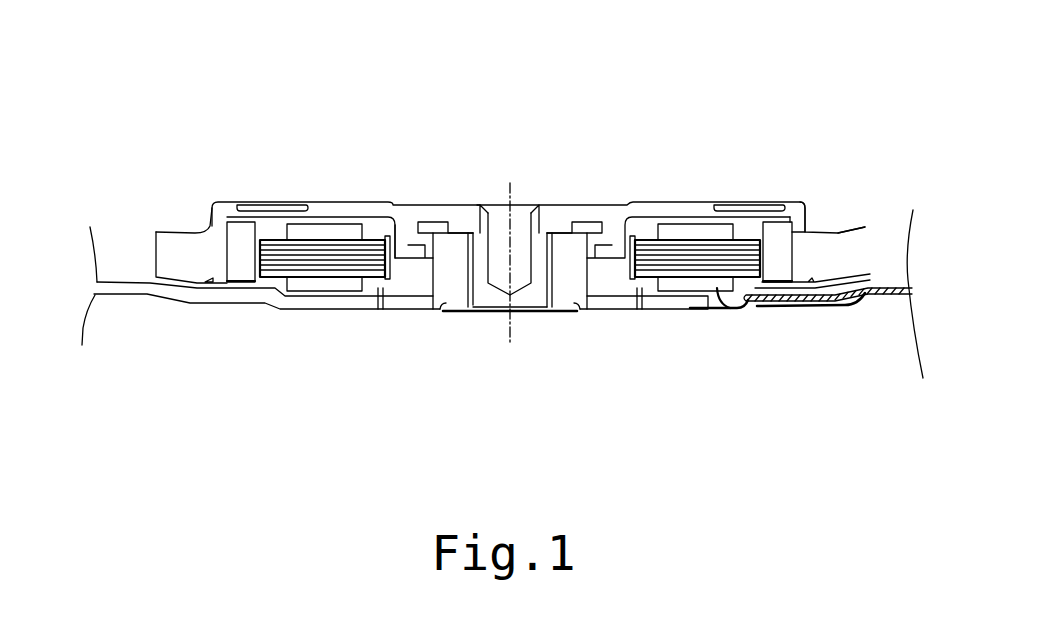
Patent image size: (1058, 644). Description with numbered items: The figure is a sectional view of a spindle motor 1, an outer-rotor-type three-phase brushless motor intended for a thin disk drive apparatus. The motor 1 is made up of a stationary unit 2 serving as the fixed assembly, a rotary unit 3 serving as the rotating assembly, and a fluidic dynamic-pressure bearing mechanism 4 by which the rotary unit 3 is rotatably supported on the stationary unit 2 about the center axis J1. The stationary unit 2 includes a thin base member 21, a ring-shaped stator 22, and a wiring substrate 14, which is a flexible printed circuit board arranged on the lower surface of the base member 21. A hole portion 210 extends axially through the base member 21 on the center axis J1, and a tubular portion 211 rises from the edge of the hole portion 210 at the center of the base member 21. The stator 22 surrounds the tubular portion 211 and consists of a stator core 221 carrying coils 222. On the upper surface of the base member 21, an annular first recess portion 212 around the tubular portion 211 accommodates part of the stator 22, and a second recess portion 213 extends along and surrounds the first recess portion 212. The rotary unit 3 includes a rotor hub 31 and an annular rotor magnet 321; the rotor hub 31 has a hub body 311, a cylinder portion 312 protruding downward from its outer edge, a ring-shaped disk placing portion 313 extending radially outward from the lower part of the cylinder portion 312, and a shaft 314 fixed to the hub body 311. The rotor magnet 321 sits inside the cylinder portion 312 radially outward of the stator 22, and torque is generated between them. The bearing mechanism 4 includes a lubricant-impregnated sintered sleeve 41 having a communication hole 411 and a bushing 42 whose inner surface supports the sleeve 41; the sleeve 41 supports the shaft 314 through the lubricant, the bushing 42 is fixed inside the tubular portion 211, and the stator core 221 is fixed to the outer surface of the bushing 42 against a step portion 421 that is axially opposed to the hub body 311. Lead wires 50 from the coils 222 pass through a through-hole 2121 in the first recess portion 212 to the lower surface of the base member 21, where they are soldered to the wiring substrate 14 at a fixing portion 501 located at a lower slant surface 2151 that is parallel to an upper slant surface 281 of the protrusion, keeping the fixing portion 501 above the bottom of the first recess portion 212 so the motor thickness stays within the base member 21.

The spindle motor 1 is at (98, 113).
The stationary unit 2 is at (313, 410).
The rotary unit 3 is at (407, 178).
The bearing mechanism 4 is at (468, 371).
The wiring substrate 14 is at (926, 306).
The base member 21 is at (128, 283).
The stator 22 is at (651, 224).
The rotor hub 31 is at (358, 201).
The sleeve 41 is at (441, 233).
The bushing 42 is at (603, 290).
The lead wires 50 is at (735, 300).
The hole portion 210 is at (632, 303).
The tubular portion 211 is at (378, 305).
The first recess portion 212 is at (318, 290).
The second recess portion 213 is at (241, 284).
The stator core 221 is at (280, 250).
The coils 222 is at (352, 303).
The upper slant surface 281 is at (853, 281).
The hub body 311 is at (689, 202).
The cylinder portion 312 is at (205, 201).
The disk placing portion 313 is at (178, 231).
The shaft 314 is at (486, 205).
The rotor magnet 321 is at (237, 262).
The communication hole 411 is at (562, 245).
The step portion 421 is at (633, 225).
The fixing portion 501 is at (855, 300).
The through-hole 2121 is at (690, 308).
The lower slant surface 2151 is at (837, 293).
The center axis J1 is at (508, 183).